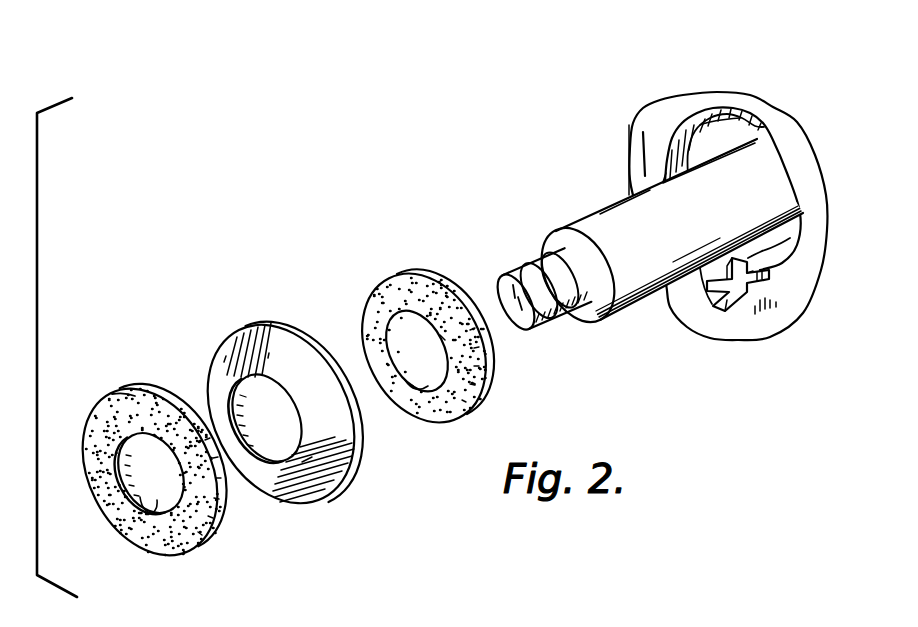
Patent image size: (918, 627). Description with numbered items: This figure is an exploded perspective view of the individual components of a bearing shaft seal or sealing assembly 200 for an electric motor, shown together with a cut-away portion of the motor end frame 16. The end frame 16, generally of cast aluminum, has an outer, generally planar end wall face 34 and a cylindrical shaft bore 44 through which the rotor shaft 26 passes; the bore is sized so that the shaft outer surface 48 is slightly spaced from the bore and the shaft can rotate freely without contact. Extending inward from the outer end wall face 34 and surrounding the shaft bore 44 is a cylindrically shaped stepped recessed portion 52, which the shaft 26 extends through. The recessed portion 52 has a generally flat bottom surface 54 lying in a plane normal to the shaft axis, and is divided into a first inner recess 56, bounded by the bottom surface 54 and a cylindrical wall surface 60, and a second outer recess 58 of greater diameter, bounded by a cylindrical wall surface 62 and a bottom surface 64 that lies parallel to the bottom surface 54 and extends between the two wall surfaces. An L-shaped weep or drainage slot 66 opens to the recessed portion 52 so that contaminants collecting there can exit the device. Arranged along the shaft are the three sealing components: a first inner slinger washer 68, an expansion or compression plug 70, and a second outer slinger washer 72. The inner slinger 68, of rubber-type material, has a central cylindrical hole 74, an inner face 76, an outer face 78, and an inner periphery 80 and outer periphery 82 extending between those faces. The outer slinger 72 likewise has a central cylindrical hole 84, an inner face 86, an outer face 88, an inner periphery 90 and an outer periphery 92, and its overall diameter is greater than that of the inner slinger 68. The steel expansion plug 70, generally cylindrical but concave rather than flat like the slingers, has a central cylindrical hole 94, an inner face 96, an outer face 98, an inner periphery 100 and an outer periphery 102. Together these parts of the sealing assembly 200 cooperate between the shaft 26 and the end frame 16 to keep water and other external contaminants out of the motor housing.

The end frame 16 is at (662, 107).
The rotor shaft 26 is at (648, 276).
The outer end wall face 34 is at (798, 137).
The shaft bore 44 is at (778, 167).
The shaft outer surface 48 is at (660, 247).
The recessed portion 52 is at (733, 131).
The bottom surface 54 is at (796, 239).
The first inner recess 56 is at (808, 272).
The second outer recess 58 is at (663, 143).
The cylindrical wall surface 60 is at (714, 126).
The cylindrical wall surface 62 is at (660, 106).
The bottom surface 64 is at (655, 165).
The drainage slot 66 is at (705, 290).
The first inner slinger washer 68 is at (412, 273).
The expansion plug 70 is at (268, 331).
The second outer slinger washer 72 is at (133, 391).
The cylindrical hole 74 is at (432, 347).
The inner face 76 is at (463, 290).
The outer face 78 is at (447, 402).
The inner periphery 80 is at (418, 394).
The outer periphery 82 is at (488, 362).
The cylindrical hole 84 is at (135, 475).
The inner face 86 is at (168, 392).
The outer face 88 is at (163, 541).
The inner periphery 90 is at (123, 533).
The outer periphery 92 is at (223, 524).
The cylindrical hole 94 is at (278, 420).
The inner face 96 is at (323, 350).
The outer face 98 is at (318, 488).
The inner periphery 100 is at (277, 463).
The outer periphery 102 is at (360, 458).
The sealing assembly 200 is at (532, 194).